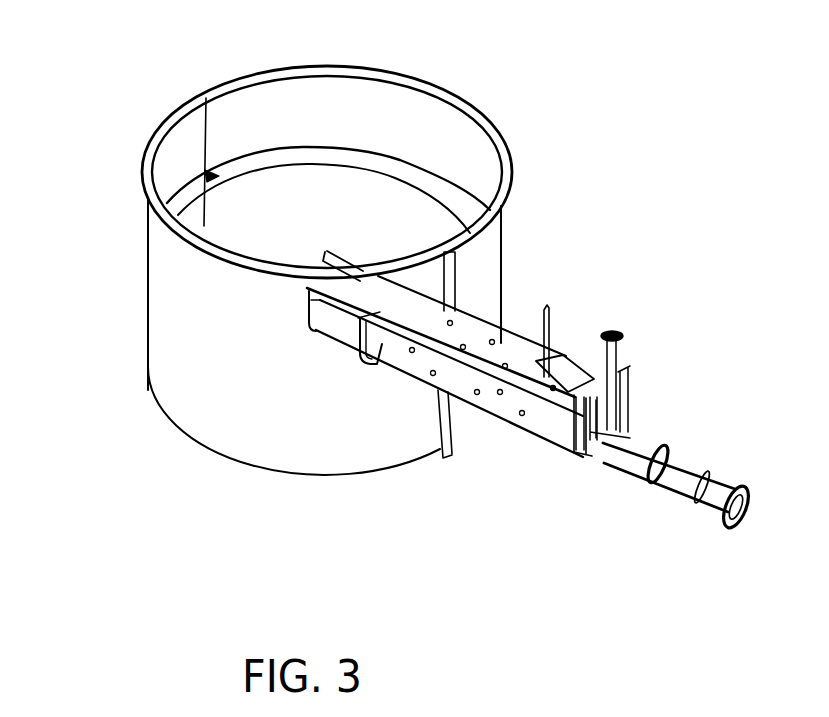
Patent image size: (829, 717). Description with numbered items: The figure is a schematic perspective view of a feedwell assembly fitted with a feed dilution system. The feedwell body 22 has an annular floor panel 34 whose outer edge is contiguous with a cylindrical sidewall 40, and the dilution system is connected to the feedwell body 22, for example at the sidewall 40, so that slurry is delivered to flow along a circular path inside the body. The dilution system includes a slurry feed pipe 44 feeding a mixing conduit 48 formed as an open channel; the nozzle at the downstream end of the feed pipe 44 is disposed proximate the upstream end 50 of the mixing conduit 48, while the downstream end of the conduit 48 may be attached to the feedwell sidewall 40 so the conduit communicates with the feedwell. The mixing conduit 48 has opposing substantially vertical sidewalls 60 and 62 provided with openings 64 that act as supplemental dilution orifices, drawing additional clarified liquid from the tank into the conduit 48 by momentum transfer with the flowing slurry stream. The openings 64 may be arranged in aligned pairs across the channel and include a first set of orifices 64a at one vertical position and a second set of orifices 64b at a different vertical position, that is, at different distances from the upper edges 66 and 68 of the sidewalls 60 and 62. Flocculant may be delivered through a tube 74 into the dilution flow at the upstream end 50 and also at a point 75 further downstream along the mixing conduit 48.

The feedwell body 22 is at (167, 308).
The annular floor panel 34 is at (273, 158).
The cylindrical sidewall 40 is at (243, 330).
The feed pipe 44 is at (672, 483).
The mixing conduit 48 is at (467, 318).
The upstream end 50 is at (563, 450).
The sidewall 60 is at (548, 427).
The sidewall 62 is at (575, 378).
The openings 64 is at (433, 373).
The first set of orifices 64a is at (488, 414).
The second set of orifices 64b is at (525, 343).
The upper edge 66 is at (353, 312).
The upper edge 68 is at (571, 367).
The tube 74 is at (620, 435).
The point 75 is at (550, 332).